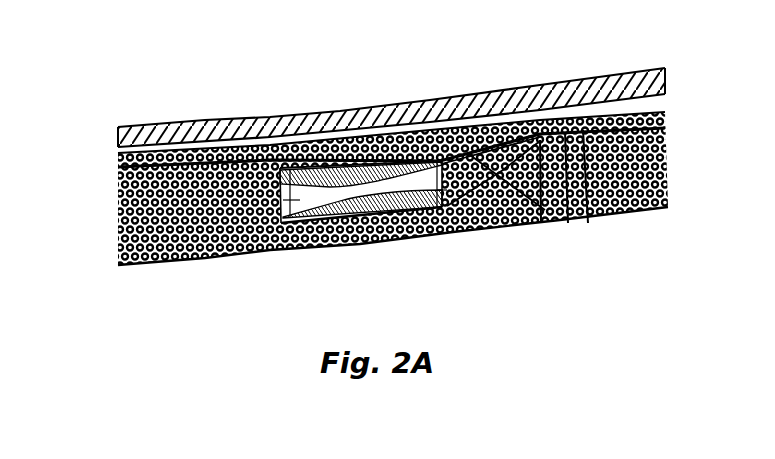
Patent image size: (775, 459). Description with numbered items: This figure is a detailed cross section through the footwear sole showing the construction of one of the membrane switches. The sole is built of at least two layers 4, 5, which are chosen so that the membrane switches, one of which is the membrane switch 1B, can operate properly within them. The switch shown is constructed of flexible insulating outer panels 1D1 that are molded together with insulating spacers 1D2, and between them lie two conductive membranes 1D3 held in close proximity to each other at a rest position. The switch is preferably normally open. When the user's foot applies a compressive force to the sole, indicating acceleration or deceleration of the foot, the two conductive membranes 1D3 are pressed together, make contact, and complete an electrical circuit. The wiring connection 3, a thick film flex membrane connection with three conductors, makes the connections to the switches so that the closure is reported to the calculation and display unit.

The membrane switch 1B is at (268, 200).
The flexible insulating outer panels 1D1 is at (340, 108).
The insulating spacers 1D2 is at (470, 197).
The conductive membranes 1D3 is at (343, 222).
The wiring connection 3 is at (530, 223).
The sole layer 4 is at (660, 158).
The sole layer 5 is at (665, 72).